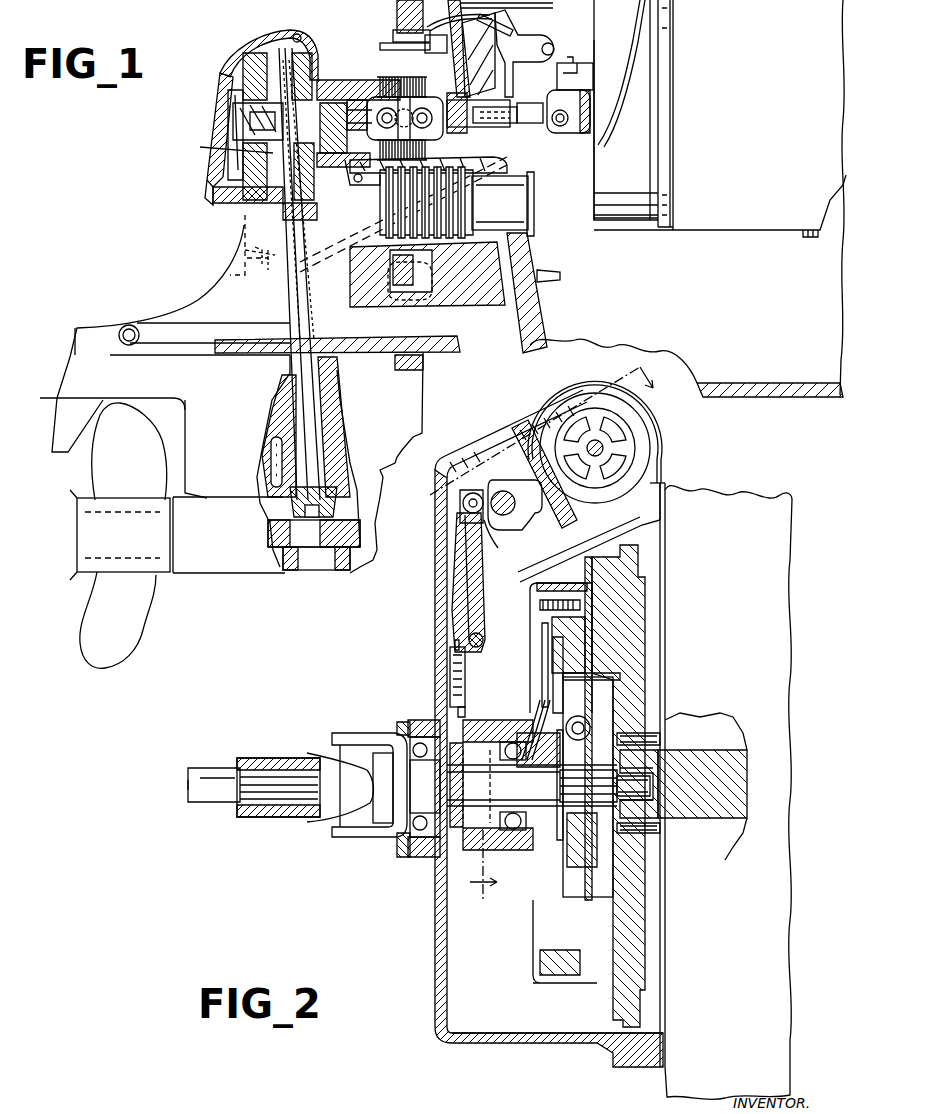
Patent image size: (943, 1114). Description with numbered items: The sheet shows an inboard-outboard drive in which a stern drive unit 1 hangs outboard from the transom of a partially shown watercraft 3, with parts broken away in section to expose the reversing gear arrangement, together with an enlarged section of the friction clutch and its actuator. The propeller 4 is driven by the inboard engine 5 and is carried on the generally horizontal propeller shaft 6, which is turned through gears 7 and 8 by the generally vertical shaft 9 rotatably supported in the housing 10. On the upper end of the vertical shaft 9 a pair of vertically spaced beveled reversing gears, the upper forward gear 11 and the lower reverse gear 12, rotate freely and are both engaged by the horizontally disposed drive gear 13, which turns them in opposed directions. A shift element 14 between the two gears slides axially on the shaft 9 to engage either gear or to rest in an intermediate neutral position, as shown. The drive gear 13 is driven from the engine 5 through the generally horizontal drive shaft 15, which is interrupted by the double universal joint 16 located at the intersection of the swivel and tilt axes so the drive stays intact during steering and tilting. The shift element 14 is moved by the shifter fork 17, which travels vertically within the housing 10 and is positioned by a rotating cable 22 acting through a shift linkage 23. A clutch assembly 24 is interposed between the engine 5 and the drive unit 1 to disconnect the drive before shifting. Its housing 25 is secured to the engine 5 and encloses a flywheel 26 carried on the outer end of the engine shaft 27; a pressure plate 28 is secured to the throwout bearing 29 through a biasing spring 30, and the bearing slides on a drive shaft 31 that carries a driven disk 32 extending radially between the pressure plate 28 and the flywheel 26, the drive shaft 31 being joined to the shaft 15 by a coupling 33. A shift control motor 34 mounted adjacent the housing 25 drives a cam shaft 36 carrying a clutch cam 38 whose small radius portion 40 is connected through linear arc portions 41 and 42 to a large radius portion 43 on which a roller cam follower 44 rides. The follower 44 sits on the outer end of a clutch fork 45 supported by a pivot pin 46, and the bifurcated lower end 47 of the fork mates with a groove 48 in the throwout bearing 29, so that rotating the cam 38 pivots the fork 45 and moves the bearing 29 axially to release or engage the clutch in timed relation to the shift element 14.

In FIG. 1, the stern drive unit 1 is at (172, 225).
In FIG. 1, the watercraft 3 is at (807, 383).
In FIG. 2, the watercraft 3 is at (548, 633).
In FIG. 1, the propeller 4 is at (100, 607).
In FIG. 1, the engine 5 is at (770, 228).
In FIG. 1, the propeller shaft 6 is at (275, 538).
In FIG. 1, the gear 7 is at (330, 495).
In FIG. 1, the gear 8 is at (327, 566).
In FIG. 1, the vertical shaft 9 is at (303, 418).
In FIG. 1, the housing 10 is at (330, 445).
In FIG. 1, the forward gear 11 is at (245, 92).
In FIG. 1, the reverse gear 12 is at (245, 152).
In FIG. 1, the drive gear 13 is at (312, 74).
In FIG. 1, the shift element 14 is at (262, 120).
In FIG. 1, the drive shaft 15 is at (488, 115).
In FIG. 2, the drive shaft 15 is at (215, 790).
In FIG. 1, the double universal joint 16 is at (450, 88).
In FIG. 1, the shifter fork 17 is at (250, 118).
In FIG. 1, the rotating cable 22 is at (632, 78).
In FIG. 1, the shift linkage 23 is at (237, 266).
In FIG. 1, the clutch assembly 24 is at (634, 232).
In FIG. 2, the clutch assembly 24 is at (527, 1056).
In FIG. 1, the housing 25 is at (596, 183).
In FIG. 2, the housing 25 is at (437, 983).
In FIG. 2, the flywheel 26 is at (633, 605).
In FIG. 2, the engine shaft 27 is at (716, 755).
In FIG. 2, the pressure plate 28 is at (565, 628).
In FIG. 2, the throwout bearing 29 is at (515, 730).
In FIG. 2, the biasing spring 30 is at (545, 700).
In FIG. 2, the drive shaft 31 is at (532, 795).
In FIG. 2, the driven disk 32 is at (597, 660).
In FIG. 2, the coupling 33 is at (360, 835).
In FIG. 2, the shift control motor 34 is at (645, 450).
In FIG. 2, the cam shaft 36 is at (500, 495).
In FIG. 2, the clutch cam 38 is at (522, 530).
In FIG. 2, the small radius portion 40 is at (570, 512).
In FIG. 2, the linear arc portion 41 is at (462, 490).
In FIG. 2, the linear arc portion 42 is at (510, 490).
In FIG. 2, the large radius portion 43 is at (487, 545).
In FIG. 2, the cam follower 44 is at (466, 508).
In FIG. 2, the clutch fork 45 is at (468, 570).
In FIG. 2, the pivot pin 46 is at (469, 632).
In FIG. 2, the bifurcated lower end 47 is at (490, 712).
In FIG. 2, the groove 48 is at (500, 738).